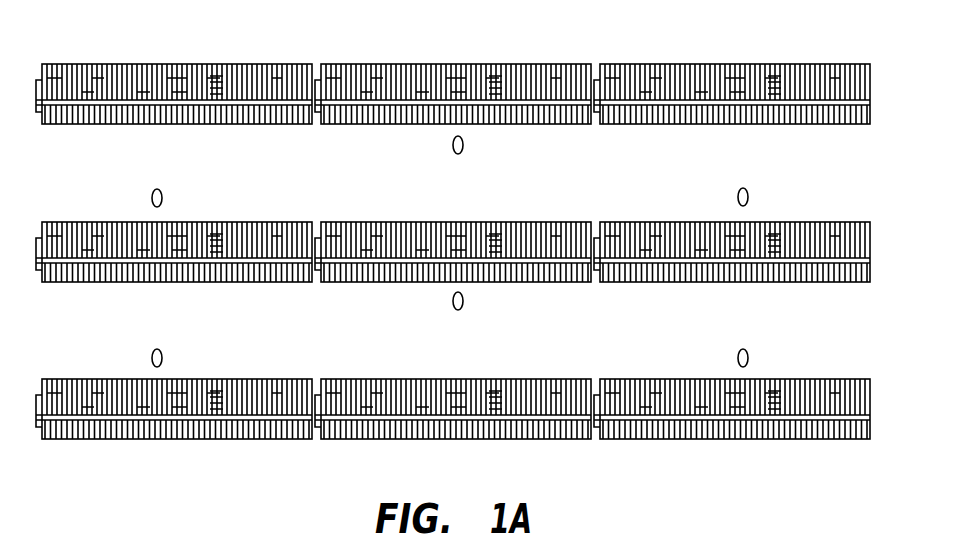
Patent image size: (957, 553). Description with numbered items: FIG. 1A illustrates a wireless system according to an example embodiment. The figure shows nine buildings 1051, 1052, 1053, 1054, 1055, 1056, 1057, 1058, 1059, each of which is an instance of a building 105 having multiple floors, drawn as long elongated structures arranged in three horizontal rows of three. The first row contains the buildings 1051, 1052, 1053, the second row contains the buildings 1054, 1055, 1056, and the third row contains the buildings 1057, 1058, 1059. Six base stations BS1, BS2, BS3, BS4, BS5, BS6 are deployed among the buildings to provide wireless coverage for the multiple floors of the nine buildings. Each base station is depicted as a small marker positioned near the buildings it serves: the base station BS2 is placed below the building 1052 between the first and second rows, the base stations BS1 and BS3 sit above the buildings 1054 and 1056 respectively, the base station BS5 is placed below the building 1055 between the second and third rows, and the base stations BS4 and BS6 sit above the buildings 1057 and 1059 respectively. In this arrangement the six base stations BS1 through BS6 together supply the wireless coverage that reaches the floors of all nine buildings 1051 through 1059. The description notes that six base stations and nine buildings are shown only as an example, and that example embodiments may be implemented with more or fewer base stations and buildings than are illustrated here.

The building 105 is at (453, 221).
The building 1051 is at (178, 64).
The building 1052 is at (457, 64).
The building 1053 is at (736, 64).
The building 1054 is at (101, 222).
The building 1055 is at (396, 222).
The building 1056 is at (675, 222).
The building 1057 is at (101, 379).
The building 1058 is at (402, 379).
The building 1059 is at (680, 379).
The base station BS1 is at (163, 197).
The base station BS2 is at (464, 144).
The base station BS3 is at (749, 196).
The base station BS4 is at (163, 357).
The base station BS5 is at (464, 300).
The base station BS6 is at (749, 357).